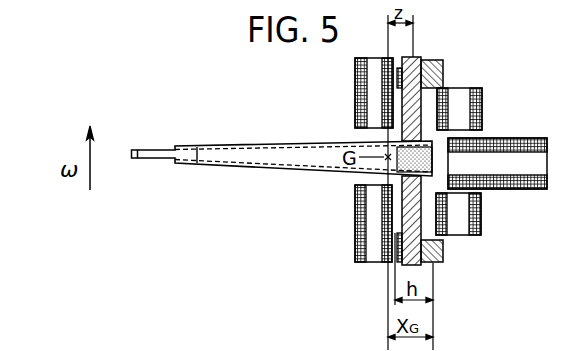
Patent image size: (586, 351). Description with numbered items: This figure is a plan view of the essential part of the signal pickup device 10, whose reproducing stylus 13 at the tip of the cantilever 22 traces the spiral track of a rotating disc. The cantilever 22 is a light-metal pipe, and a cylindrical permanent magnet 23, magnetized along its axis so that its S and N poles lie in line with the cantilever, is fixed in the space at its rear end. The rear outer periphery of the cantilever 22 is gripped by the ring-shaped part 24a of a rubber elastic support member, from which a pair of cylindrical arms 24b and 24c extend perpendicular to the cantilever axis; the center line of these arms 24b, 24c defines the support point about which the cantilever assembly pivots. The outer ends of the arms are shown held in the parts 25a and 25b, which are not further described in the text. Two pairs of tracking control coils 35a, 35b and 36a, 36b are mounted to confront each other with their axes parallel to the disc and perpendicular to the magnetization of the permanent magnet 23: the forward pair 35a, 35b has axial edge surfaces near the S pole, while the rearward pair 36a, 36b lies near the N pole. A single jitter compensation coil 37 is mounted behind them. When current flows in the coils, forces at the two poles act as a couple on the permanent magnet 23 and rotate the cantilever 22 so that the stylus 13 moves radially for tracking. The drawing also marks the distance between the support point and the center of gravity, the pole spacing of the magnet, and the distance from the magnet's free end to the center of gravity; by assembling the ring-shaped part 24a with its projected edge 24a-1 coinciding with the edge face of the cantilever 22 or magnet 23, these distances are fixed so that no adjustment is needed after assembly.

The signal pickup device 10 is at (455, 27).
The reproducing stylus 13 is at (131, 153).
The cantilever 22 is at (270, 145).
The permanent magnet 23 is at (372, 168).
The ring-shaped part 24a is at (472, 139).
The projected edge 24a-1 is at (443, 190).
The arm 24b is at (441, 245).
The arm 24c is at (423, 97).
The lower bearing 25a is at (412, 264).
The upper bearing 25b is at (418, 58).
The tracking control coil 35a is at (355, 225).
The tracking control coil 35b is at (355, 100).
The tracking control coil 36a is at (482, 220).
The tracking control coil 36b is at (483, 96).
The jitter compensation coil 37 is at (531, 138).